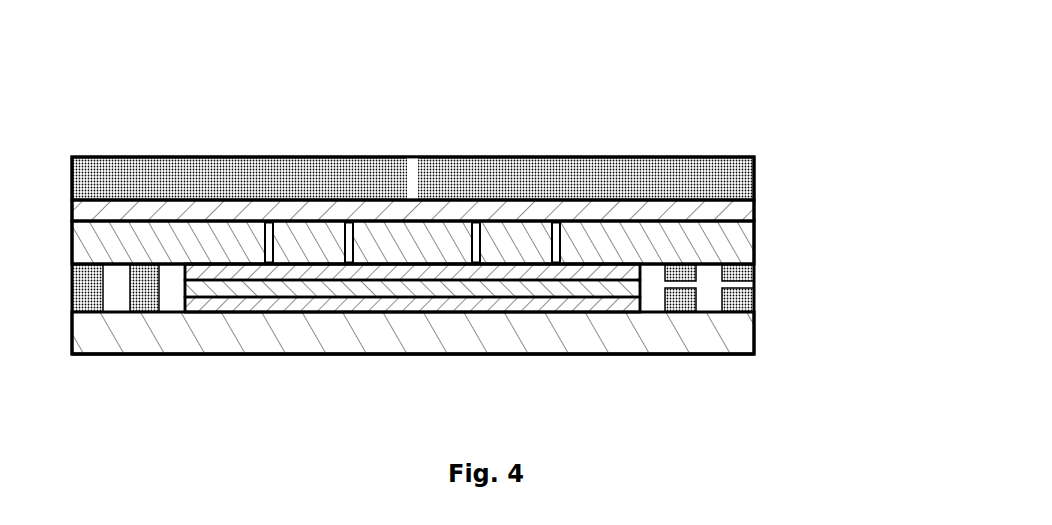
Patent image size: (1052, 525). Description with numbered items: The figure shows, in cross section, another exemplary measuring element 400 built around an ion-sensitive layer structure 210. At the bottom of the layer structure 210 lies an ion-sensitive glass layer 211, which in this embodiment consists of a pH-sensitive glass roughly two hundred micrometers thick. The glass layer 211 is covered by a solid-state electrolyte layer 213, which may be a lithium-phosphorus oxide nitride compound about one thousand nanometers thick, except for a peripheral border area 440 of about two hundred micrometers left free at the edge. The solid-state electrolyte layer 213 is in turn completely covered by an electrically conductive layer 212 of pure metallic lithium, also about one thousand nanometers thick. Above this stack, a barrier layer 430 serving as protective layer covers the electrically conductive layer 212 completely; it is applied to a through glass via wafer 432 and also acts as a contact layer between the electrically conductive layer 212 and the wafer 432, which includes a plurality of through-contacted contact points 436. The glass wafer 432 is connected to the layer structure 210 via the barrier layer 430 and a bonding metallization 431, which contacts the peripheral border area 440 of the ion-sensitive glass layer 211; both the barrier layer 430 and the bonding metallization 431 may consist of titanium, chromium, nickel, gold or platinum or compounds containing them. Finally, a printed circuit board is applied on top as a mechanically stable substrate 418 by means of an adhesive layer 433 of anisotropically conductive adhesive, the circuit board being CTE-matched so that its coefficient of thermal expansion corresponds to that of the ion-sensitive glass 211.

The measuring element 400 is at (306, 74).
The mechanically stable substrate 418 is at (677, 182).
The adhesive layer 433 is at (727, 215).
The through glass via wafer 432 is at (728, 245).
The through-contacted contact points 436 is at (360, 157).
The bonding metallization 431 is at (395, 353).
The peripheral border area 440 is at (142, 313).
The barrier layer 430 is at (407, 360).
The electrically conductive layer 212 is at (603, 289).
The solid-state electrolyte layer 213 is at (600, 303).
The ion-sensitive glass layer 211 is at (695, 332).
The layer structure 210 is at (845, 237).